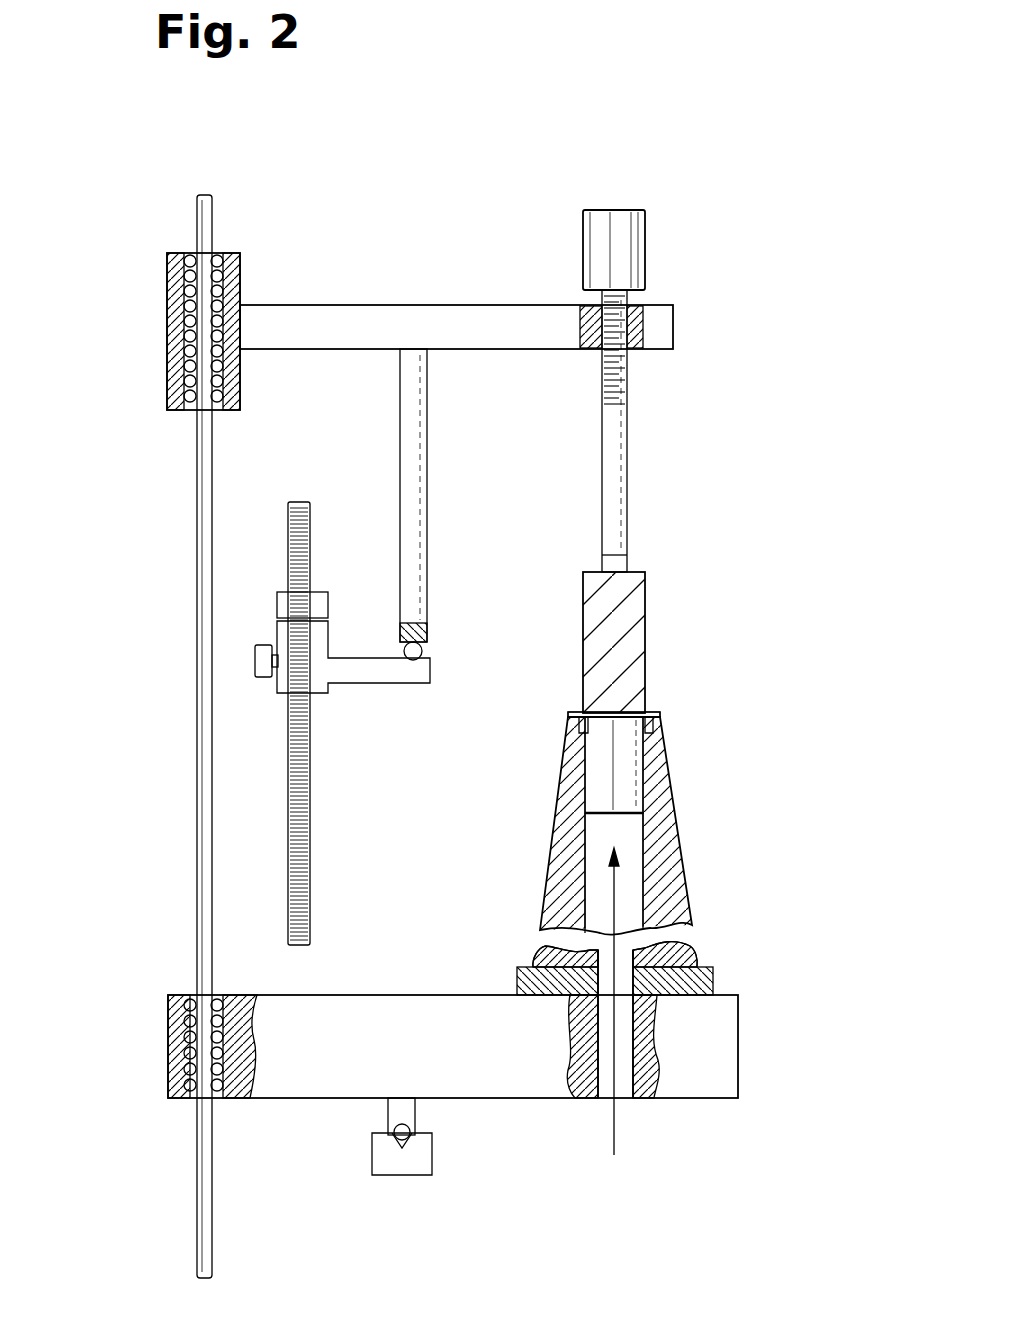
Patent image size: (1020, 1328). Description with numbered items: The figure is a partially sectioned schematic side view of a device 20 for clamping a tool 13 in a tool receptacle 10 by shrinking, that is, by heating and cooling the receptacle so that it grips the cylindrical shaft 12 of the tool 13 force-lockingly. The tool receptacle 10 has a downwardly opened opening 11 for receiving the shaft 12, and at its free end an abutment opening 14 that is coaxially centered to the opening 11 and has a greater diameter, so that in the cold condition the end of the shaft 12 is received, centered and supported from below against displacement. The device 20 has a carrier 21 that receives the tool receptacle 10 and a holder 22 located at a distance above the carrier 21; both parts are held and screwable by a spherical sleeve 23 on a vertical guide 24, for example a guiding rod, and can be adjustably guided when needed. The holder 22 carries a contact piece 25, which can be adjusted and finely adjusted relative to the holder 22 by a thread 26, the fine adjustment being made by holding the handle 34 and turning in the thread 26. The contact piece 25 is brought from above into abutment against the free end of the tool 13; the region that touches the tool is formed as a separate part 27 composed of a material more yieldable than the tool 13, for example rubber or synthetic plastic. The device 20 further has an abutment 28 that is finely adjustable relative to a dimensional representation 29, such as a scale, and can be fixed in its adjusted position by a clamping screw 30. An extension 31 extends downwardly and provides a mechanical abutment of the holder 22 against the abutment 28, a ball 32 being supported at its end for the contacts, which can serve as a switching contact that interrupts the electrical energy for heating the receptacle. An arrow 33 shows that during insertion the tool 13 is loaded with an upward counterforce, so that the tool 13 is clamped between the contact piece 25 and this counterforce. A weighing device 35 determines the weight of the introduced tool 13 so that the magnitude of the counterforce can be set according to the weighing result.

The tool receptacle 10 is at (665, 826).
The opening 11 is at (600, 887).
The cylindrical shaft 12 is at (625, 766).
The tool 13 is at (630, 655).
The abutment opening 14 is at (650, 722).
The device 20 is at (482, 160).
The carrier 21 is at (705, 1052).
The holder 22 is at (348, 325).
The spherical sleeve 23 is at (192, 341).
The vertical guide 24 is at (206, 768).
The contact piece 25 is at (614, 435).
The thread 26 is at (598, 348).
The part 27 is at (616, 563).
The abutment 28 is at (322, 690).
The dimensional representation 29 is at (305, 810).
The clamping screw 30 is at (263, 645).
The extension 31 is at (415, 438).
The ball 32 is at (422, 652).
The arrow 33 is at (615, 914).
The knob 34 is at (625, 240).
The weighing device 35 is at (405, 1140).